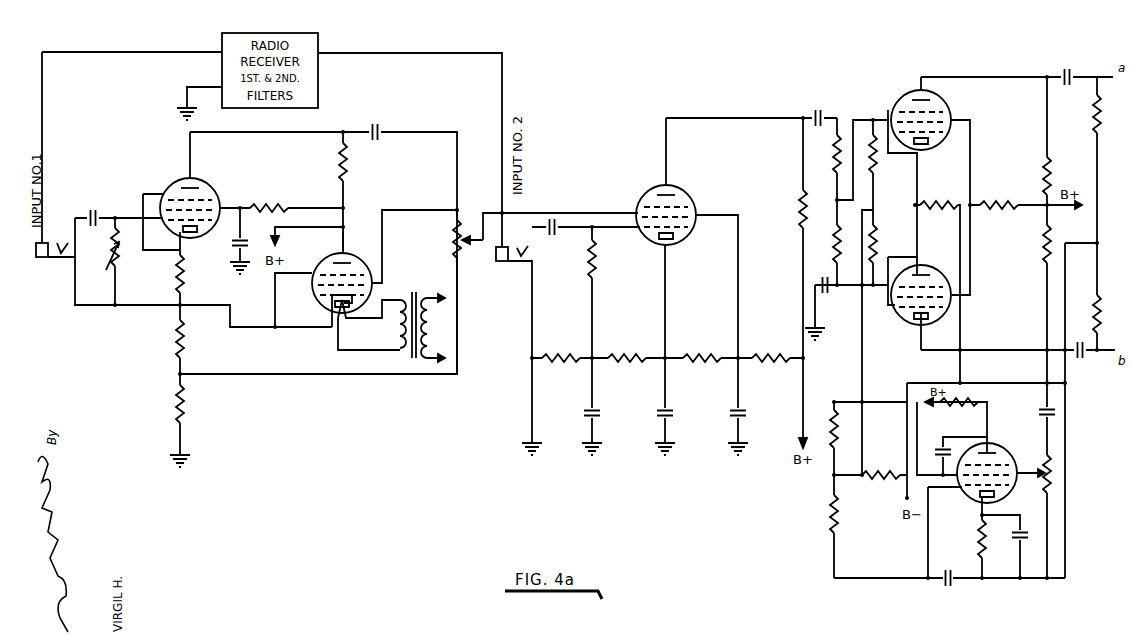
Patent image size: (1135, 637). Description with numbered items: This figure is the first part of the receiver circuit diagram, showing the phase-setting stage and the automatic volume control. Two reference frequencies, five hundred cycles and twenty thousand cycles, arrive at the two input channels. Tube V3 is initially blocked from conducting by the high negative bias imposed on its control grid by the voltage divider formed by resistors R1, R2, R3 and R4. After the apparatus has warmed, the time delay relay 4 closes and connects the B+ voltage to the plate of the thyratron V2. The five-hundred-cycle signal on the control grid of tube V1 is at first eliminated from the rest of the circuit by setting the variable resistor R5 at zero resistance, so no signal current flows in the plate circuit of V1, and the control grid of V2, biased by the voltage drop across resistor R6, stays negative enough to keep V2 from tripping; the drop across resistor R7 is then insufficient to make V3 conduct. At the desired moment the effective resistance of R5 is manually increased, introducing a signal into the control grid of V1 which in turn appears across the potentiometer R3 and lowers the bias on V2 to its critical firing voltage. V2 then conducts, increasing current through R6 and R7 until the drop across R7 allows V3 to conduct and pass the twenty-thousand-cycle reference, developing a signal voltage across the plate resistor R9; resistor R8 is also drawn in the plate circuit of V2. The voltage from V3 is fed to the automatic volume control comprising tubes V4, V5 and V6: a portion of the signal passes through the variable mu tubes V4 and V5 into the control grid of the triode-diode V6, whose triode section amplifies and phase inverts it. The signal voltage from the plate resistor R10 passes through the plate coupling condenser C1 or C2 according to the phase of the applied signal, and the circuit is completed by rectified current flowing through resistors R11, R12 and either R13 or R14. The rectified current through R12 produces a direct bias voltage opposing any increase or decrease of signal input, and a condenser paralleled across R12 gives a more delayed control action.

The tube V1 is at (178, 182).
The thyratron V2 is at (319, 293).
The tube V3 is at (687, 199).
The variable mu tube V4 is at (946, 104).
The variable mu tube V5 is at (899, 318).
The triode-diode V6 is at (1003, 440).
The resistor R1 is at (568, 362).
The resistor R2 is at (632, 362).
The resistor R3 is at (712, 362).
The resistor R4 is at (778, 362).
The variable resistor R5 is at (122, 261).
The resistor R6 is at (190, 352).
The resistor R7 is at (190, 420).
The variable resistor R8 is at (452, 250).
The plate resistor R9 is at (800, 205).
The plate resistor R10 is at (968, 406).
The resistor R11 is at (977, 538).
The resistor R12 is at (880, 470).
The resistor R13 is at (838, 508).
The resistor R14 is at (830, 438).
The plate coupling condenser C1 is at (935, 461).
The plate coupling condenser C2 is at (955, 551).
The time delay relay 4 is at (344, 246).